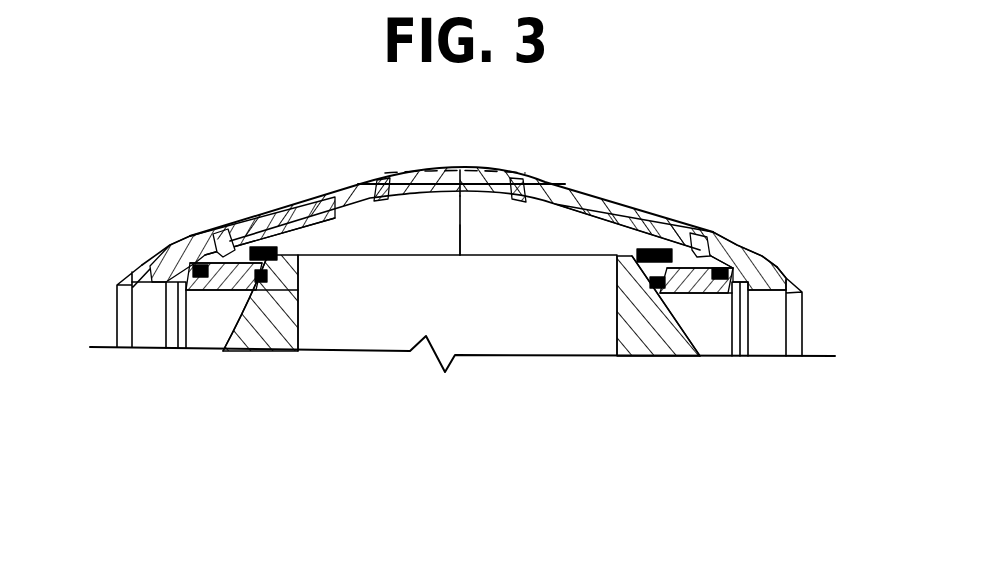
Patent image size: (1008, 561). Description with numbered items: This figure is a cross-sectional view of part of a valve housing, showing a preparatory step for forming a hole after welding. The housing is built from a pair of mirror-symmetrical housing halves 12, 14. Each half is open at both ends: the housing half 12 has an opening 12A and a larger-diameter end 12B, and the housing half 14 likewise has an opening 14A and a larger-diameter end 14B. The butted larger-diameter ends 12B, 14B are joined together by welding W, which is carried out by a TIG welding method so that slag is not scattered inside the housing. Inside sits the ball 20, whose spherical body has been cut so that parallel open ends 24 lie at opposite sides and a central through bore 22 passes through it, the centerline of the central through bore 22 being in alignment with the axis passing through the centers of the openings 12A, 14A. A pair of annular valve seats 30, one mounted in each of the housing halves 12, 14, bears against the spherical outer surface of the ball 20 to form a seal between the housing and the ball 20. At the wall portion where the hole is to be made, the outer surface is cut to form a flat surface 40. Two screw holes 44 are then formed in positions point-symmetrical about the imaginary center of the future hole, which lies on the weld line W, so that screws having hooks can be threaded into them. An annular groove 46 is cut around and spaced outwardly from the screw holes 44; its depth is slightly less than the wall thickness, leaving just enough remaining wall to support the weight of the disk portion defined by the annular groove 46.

The housing half 12 is at (252, 226).
The opening 12A is at (115, 333).
The larger-diameter end 12B is at (468, 217).
The housing half 14 is at (628, 220).
The opening 14A is at (804, 318).
The larger-diameter end 14B is at (458, 235).
The ball 20 is at (650, 342).
The central through bore 22 is at (568, 325).
The open end 24 is at (330, 248).
The annular valve seat 30 is at (277, 252).
The flat surface 40 is at (433, 176).
The screw hole 44 is at (382, 186).
The annular groove 46 is at (381, 175).
The welding W is at (461, 187).